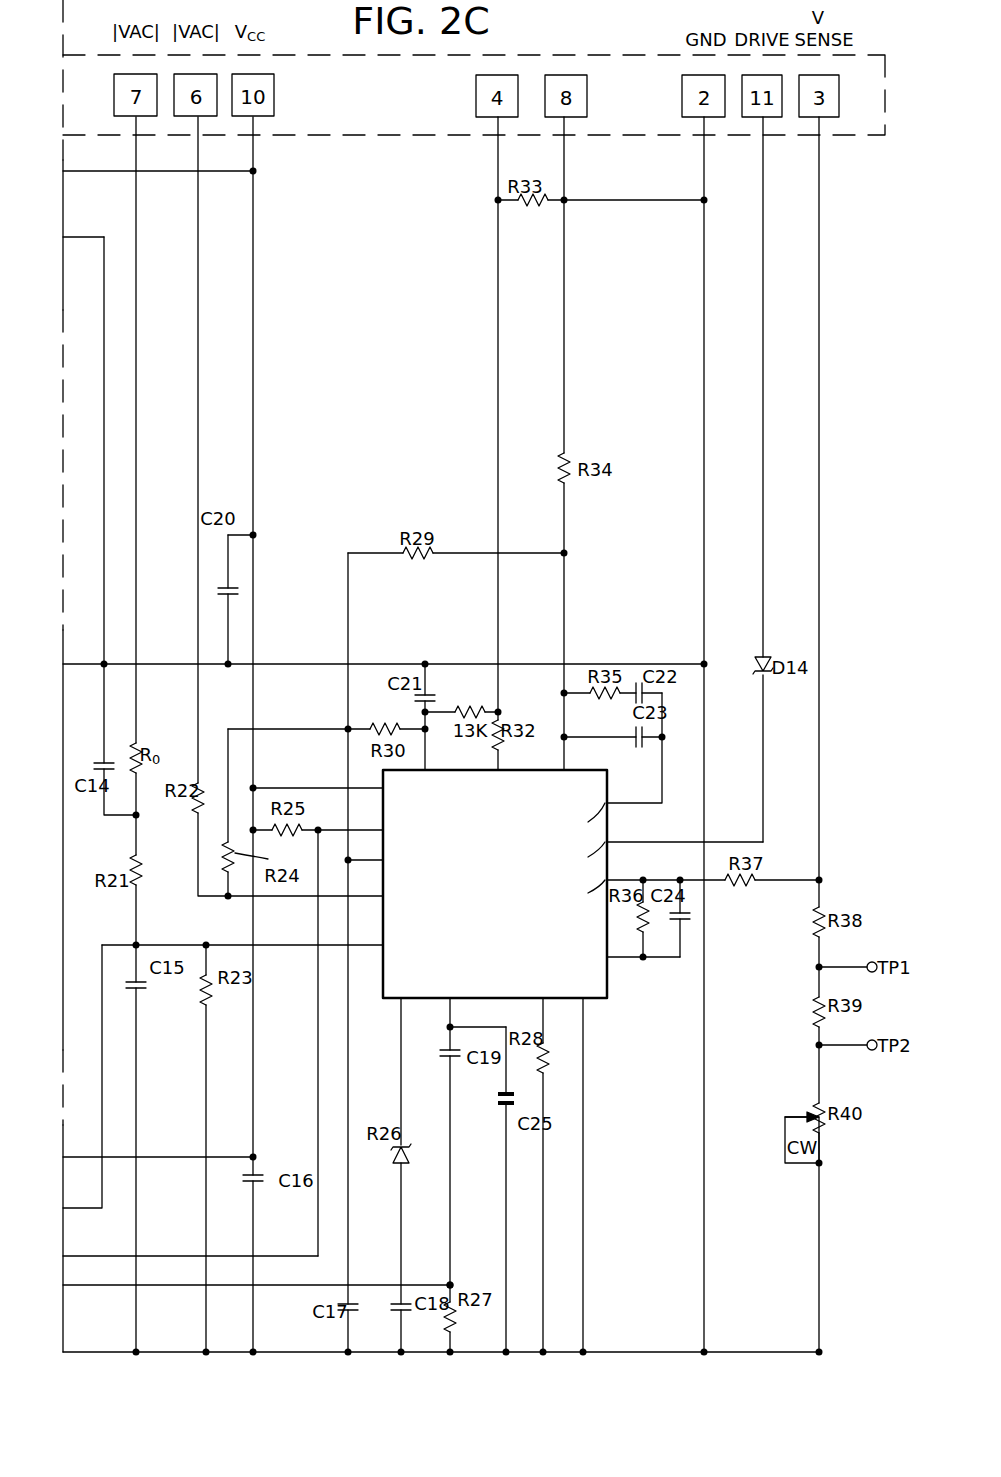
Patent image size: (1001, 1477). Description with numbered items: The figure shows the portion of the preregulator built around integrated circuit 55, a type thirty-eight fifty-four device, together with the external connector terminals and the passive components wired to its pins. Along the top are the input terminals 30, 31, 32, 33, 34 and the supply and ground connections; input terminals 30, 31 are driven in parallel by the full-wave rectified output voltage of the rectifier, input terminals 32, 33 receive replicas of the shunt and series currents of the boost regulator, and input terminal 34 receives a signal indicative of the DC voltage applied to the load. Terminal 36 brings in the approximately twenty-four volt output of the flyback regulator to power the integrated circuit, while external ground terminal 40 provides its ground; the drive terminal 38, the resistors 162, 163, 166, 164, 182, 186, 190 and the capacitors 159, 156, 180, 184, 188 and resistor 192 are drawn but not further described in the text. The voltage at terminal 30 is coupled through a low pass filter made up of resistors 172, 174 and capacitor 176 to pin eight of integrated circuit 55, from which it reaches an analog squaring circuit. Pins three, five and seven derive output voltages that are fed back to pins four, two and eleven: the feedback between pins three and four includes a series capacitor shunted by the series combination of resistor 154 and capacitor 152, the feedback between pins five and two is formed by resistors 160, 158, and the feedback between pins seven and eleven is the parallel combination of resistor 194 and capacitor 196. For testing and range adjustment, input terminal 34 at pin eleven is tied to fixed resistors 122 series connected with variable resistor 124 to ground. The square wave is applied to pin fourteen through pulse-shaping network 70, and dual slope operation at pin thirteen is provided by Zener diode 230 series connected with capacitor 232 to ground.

The input terminal 30 is at (149, 108).
The input terminal 31 is at (208, 108).
The terminal 36 is at (263, 108).
The input terminal 32 is at (485, 110).
The input terminal 33 is at (580, 108).
The external ground terminal 40 is at (715, 108).
The connector pin 11 (DRIVE) 38 is at (773, 102).
The input terminal 34 is at (828, 108).
The integrated circuit 55 is at (466, 933).
The resistor R29 162 is at (420, 557).
The capacitor C21 159 is at (433, 698).
The resistor 158 is at (459, 706).
The resistor 160 is at (494, 745).
The resistor R30 163 is at (390, 721).
The resistor 154 is at (612, 697).
The capacitor 152 is at (648, 692).
The capacitor C23 156 is at (644, 746).
The resistor R37 192 is at (748, 884).
The fixed resistors 122 is at (816, 1007).
The variable resistor 124 is at (812, 1112).
The resistor 194 is at (653, 925).
The capacitor 196 is at (690, 928).
The capacitor 176 is at (98, 764).
The resistor 172 is at (141, 745).
The resistor R22 166 is at (195, 813).
The potentiometer R24 164 is at (218, 855).
The resistor 174 is at (130, 855).
The capacitor C15 180 is at (155, 990).
The resistor R23 182 is at (212, 998).
The capacitor 232 is at (405, 1313).
The pulse-shaping network 70 is at (455, 1282).
The resistor R27 186 is at (458, 1312).
The Zener diode 230 is at (392, 1160).
The capacitor C19 184 is at (437, 1049).
The resistor R28 190 is at (548, 1058).
The capacitor C25 188 is at (492, 1100).